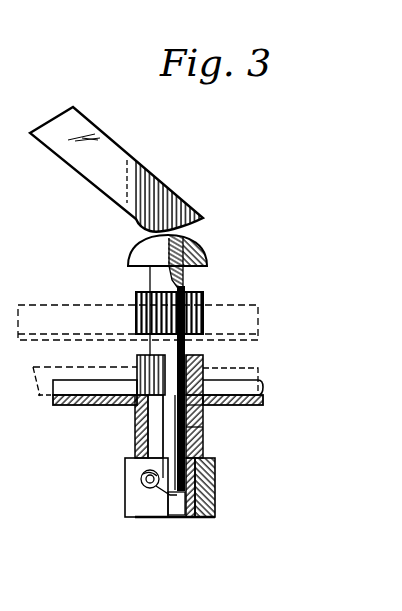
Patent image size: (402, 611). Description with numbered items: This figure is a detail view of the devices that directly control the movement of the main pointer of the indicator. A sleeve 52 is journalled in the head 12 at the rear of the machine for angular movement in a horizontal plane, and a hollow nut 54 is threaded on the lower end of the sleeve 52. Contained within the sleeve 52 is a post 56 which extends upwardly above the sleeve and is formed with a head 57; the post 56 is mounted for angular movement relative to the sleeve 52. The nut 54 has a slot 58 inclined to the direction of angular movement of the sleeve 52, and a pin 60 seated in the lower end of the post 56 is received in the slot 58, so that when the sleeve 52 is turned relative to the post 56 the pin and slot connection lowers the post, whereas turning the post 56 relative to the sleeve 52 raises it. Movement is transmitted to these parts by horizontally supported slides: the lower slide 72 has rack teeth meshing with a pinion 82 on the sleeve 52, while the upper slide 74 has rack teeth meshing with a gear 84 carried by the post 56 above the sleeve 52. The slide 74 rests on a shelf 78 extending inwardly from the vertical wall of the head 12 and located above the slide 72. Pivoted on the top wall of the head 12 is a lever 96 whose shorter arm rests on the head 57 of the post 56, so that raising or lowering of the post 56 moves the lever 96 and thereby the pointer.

The lever 96 is at (135, 168).
The head 57 is at (206, 263).
The post 56 is at (150, 277).
The gear 84 is at (200, 302).
The slide 74 is at (82, 313).
The shelf 78 is at (53, 341).
The pinion 82 is at (203, 362).
The slide 72 is at (258, 372).
The head 12 is at (93, 406).
The sleeve 52 is at (199, 436).
The hollow nut 54 is at (215, 496).
The pin 60 is at (142, 481).
The slot 58 is at (160, 483).